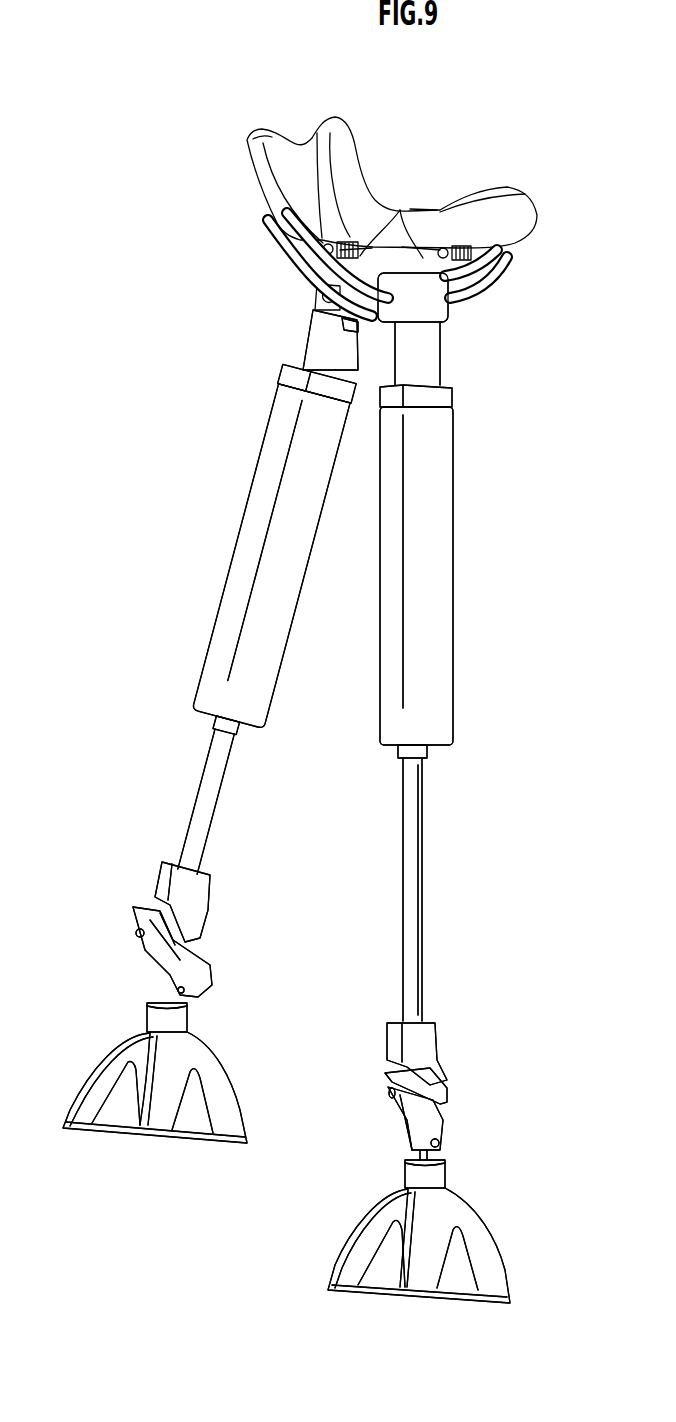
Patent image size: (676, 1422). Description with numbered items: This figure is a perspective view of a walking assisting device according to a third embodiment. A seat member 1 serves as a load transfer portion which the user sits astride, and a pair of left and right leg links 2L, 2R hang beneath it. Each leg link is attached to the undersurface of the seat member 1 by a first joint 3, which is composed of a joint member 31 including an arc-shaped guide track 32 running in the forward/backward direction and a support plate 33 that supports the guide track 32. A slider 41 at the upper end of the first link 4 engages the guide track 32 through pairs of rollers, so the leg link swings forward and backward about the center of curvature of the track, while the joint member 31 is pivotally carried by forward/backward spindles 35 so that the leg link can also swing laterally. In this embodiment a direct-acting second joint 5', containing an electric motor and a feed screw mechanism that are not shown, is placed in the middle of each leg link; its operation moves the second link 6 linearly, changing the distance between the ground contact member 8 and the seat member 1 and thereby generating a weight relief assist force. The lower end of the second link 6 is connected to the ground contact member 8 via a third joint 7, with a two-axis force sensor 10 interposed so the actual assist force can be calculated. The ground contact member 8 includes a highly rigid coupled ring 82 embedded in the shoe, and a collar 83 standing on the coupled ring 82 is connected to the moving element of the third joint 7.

The seat member 1 is at (442, 180).
The right leg link 2R is at (185, 748).
The left leg link 2L is at (446, 836).
The first joint 3 is at (341, 252).
The joint member 31 is at (292, 262).
The guide track 32 is at (309, 300).
The support plate 33 is at (400, 210).
The spindle 35 is at (318, 238).
The first link 4 is at (312, 361).
The slider 41 is at (342, 322).
The direct-acting second joint 5' is at (351, 561).
The second link 6 is at (192, 818).
The third joint 7 is at (208, 969).
The ground contact member 8 is at (313, 1132).
The coupled ring 82 is at (222, 1067).
The collar 83 is at (188, 1018).
The 2-axis force sensor 10 is at (447, 1090).